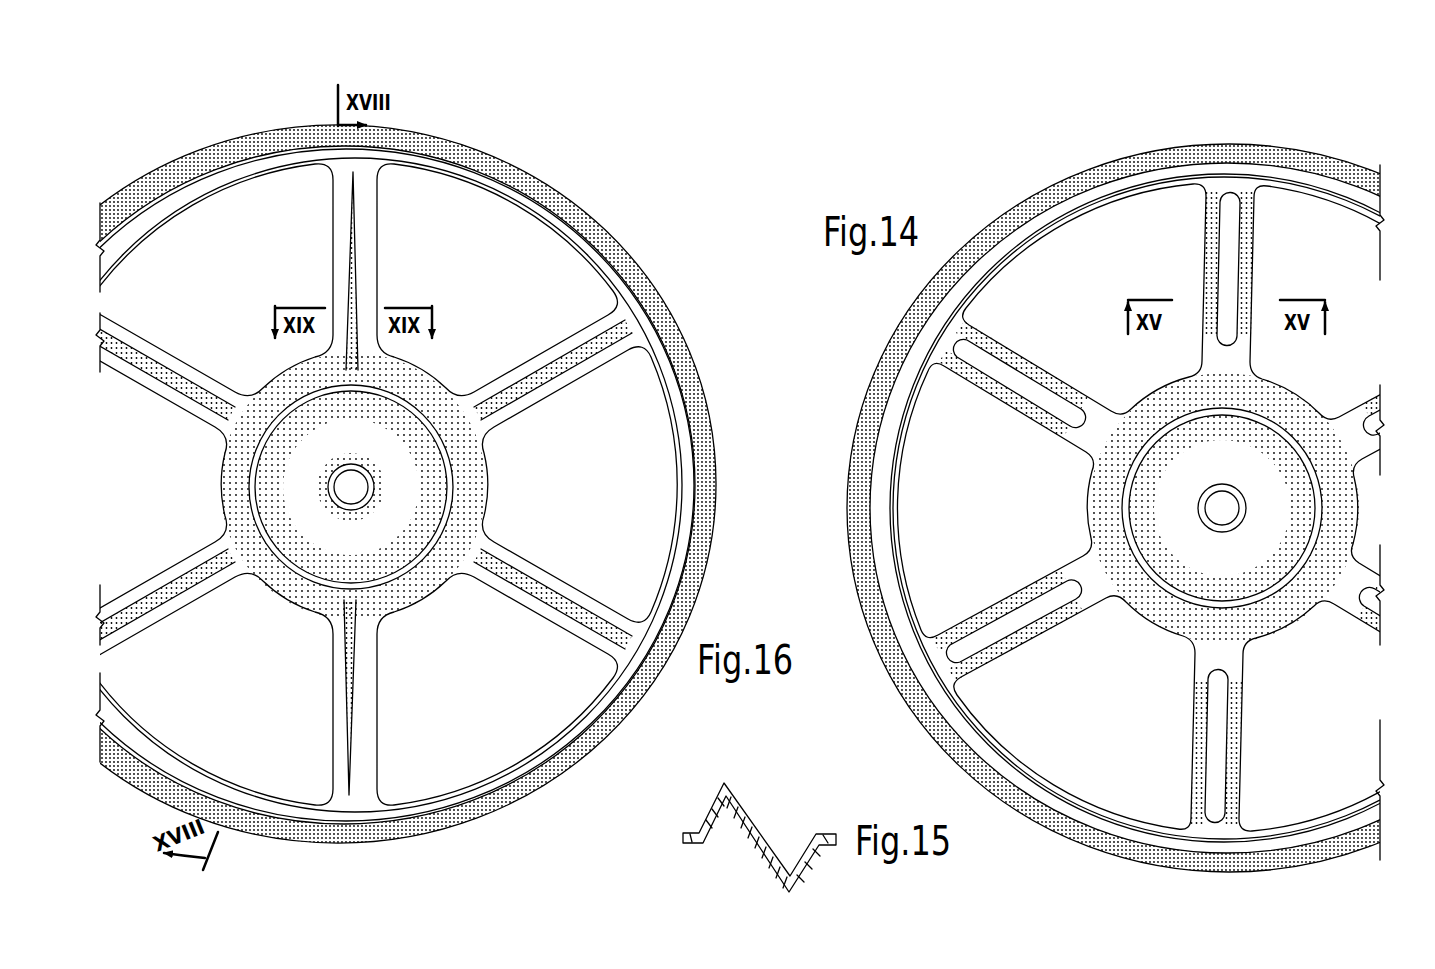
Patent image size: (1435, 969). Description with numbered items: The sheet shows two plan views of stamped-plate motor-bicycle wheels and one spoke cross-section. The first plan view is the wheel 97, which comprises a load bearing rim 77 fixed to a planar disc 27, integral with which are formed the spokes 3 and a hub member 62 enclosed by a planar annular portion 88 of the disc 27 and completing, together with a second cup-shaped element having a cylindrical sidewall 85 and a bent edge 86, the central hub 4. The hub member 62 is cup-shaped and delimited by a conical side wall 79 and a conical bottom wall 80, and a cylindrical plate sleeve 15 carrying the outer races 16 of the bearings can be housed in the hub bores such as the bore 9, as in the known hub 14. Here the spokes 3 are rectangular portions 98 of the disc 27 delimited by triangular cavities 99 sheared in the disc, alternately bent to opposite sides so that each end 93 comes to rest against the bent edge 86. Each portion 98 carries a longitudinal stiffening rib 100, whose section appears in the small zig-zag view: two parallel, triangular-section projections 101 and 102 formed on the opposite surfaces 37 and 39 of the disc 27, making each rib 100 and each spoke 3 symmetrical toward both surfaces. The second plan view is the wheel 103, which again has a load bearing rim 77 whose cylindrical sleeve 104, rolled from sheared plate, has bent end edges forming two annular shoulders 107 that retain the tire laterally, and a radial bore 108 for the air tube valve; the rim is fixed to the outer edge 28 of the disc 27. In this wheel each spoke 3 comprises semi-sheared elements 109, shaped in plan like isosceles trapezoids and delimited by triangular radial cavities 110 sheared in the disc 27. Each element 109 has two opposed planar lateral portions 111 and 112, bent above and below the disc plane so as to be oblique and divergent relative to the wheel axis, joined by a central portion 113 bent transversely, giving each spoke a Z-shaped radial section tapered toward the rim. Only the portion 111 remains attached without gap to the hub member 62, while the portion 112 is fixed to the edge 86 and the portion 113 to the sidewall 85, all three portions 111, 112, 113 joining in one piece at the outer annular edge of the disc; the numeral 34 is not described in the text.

In FIG. 16, the spokes 3 is at (383, 228).
In FIG. 14, the spokes 3 is at (1262, 247).
In FIG. 15, the spokes 3 is at (805, 810).
In FIG. 16, the central hub 4 is at (276, 620).
In FIG. 16, the bore 9 is at (432, 372).
In FIG. 16, the hub 14 is at (450, 380).
In FIG. 16, the cylindrical plate sleeve 15 is at (338, 508).
In FIG. 16, the outer races 16 is at (376, 510).
In FIG. 16, the planar disc 27 is at (303, 172).
In FIG. 14, the planar disc 27 is at (1000, 275).
In FIG. 16, the outer edge 28 is at (540, 366).
In FIG. 16, the spoke edge 34 is at (516, 618).
In FIG. 15, the surface 37 is at (742, 838).
In FIG. 15, the surface 39 is at (770, 835).
In FIG. 14, the hub member 62 is at (1133, 601).
In FIG. 16, the load bearing rim 77 is at (698, 350).
In FIG. 14, the load bearing rim 77 is at (1003, 210).
In FIG. 14, the conical side wall 79 is at (1150, 432).
In FIG. 16, the bottom wall 80 is at (285, 478).
In FIG. 14, the bottom wall 80 is at (1165, 485).
In FIG. 16, the cylindrical sidewall 85 is at (270, 378).
In FIG. 14, the bent edge 86 is at (1282, 628).
In FIG. 16, the planar annular portion 88 is at (472, 500).
In FIG. 14, the planar annular portion 88 is at (1185, 405).
In FIG. 14, the end 93 is at (1112, 410).
In FIG. 14, the wheel 97 is at (1232, 141).
In FIG. 14, the rectangular portions 98 is at (1212, 231).
In FIG. 15, the rectangular portions 98 is at (690, 844).
In FIG. 14, the triangular cavities 99 is at (1065, 240).
In FIG. 14, the longitudinal stiffening rib 100 is at (1230, 288).
In FIG. 15, the longitudinal stiffening rib 100 is at (760, 788).
In FIG. 15, the projection 101 is at (712, 806).
In FIG. 15, the projection 102 is at (800, 875).
In FIG. 16, the wheel 103 is at (555, 163).
In FIG. 16, the sleeve 104 is at (487, 165).
In FIG. 16, the annular shoulders 107 is at (633, 258).
In FIG. 16, the radial bore 108 is at (218, 790).
In FIG. 16, the semi-sheared elements 109 is at (367, 300).
In FIG. 16, the radial cavities 110 is at (185, 233).
In FIG. 16, the lateral portion 111 is at (367, 262).
In FIG. 16, the lateral portion 112 is at (344, 213).
In FIG. 16, the central portion 113 is at (352, 313).